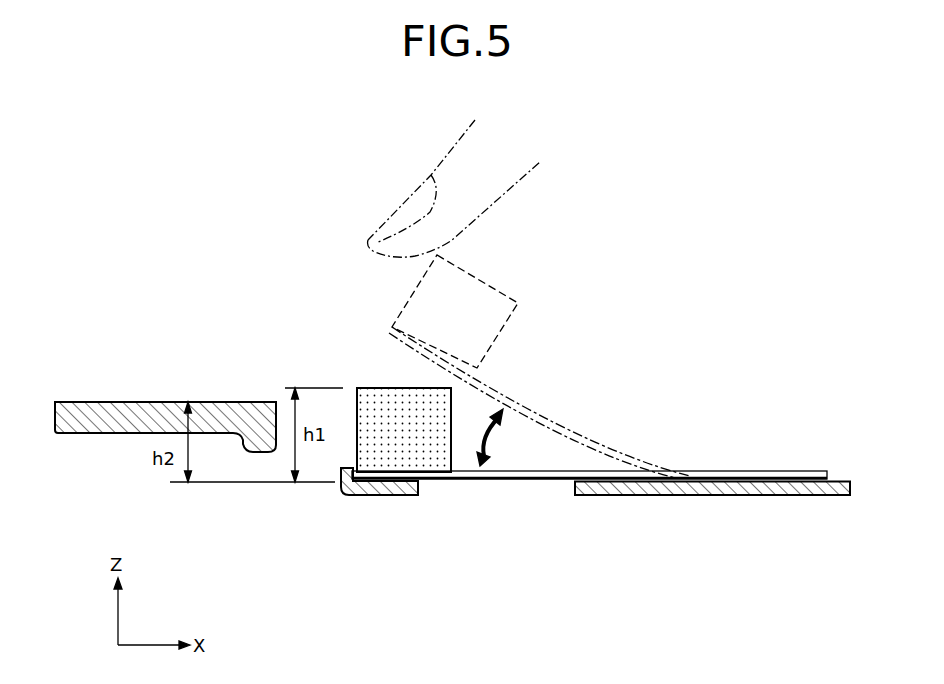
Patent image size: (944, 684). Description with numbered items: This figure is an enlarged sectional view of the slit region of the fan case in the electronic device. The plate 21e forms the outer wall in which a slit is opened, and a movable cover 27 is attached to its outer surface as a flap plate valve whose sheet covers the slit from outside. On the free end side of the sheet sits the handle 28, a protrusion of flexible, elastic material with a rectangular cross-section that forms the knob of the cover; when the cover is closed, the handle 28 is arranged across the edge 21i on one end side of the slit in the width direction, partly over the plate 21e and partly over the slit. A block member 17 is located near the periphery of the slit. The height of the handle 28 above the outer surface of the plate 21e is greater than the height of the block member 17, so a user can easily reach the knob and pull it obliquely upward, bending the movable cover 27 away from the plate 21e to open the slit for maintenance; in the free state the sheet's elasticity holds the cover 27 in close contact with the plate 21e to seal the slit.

The block member 17 is at (97, 418).
The handle 28 is at (378, 398).
The movable cover 27 is at (560, 462).
The edge 21i is at (418, 496).
The plate 21e is at (706, 496).